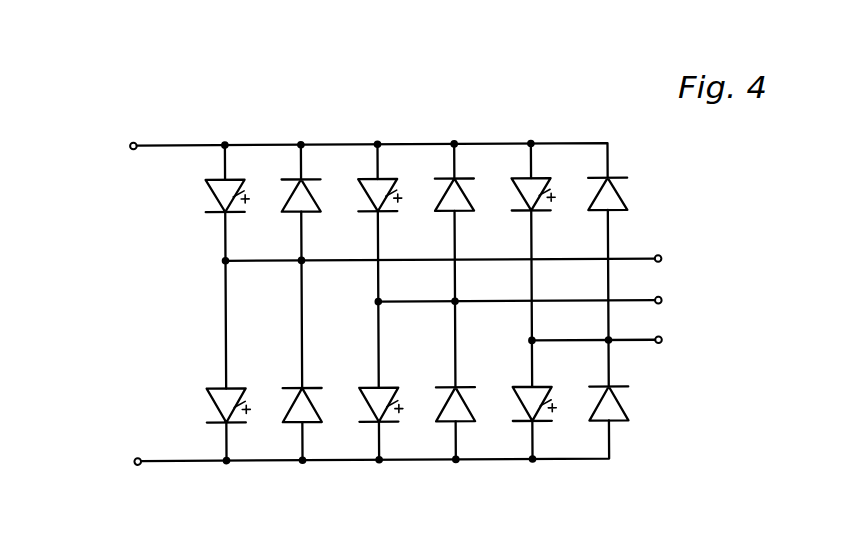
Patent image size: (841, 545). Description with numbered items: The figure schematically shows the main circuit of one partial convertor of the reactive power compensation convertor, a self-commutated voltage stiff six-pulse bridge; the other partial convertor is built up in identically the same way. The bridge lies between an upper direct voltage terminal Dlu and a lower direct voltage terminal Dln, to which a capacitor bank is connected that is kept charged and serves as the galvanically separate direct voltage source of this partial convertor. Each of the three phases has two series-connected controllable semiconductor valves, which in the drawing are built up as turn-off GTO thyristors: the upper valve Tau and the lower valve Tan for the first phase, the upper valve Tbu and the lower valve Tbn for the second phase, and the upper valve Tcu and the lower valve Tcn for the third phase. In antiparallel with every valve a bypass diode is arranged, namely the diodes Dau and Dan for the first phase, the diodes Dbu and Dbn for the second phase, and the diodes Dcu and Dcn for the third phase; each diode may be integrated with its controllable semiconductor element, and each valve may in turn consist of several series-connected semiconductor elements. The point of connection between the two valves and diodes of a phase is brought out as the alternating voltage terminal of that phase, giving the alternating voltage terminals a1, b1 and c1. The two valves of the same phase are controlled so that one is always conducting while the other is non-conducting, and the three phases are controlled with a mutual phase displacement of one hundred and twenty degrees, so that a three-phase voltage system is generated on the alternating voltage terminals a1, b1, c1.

The direct voltage terminal Dlu is at (124, 146).
The direct voltage terminal Dln is at (130, 462).
The alternating voltage terminal a1 is at (459, 259).
The alternating voltage terminal b1 is at (535, 301).
The alternating voltage terminal c1 is at (612, 339).
The semiconductor valve Tau is at (206, 194).
The bypass diode Dau is at (282, 194).
The semiconductor valve Tbu is at (358, 194).
The bypass diode Dbu is at (435, 194).
The semiconductor valve Tcu is at (512, 194).
The bypass diode Dcu is at (588, 194).
The semiconductor valve Tan is at (217, 428).
The bypass diode Dan is at (293, 428).
The semiconductor valve Tbn is at (369, 428).
The bypass diode Dbn is at (446, 428).
The semiconductor valve Tcn is at (523, 428).
The bypass diode Dcn is at (599, 428).